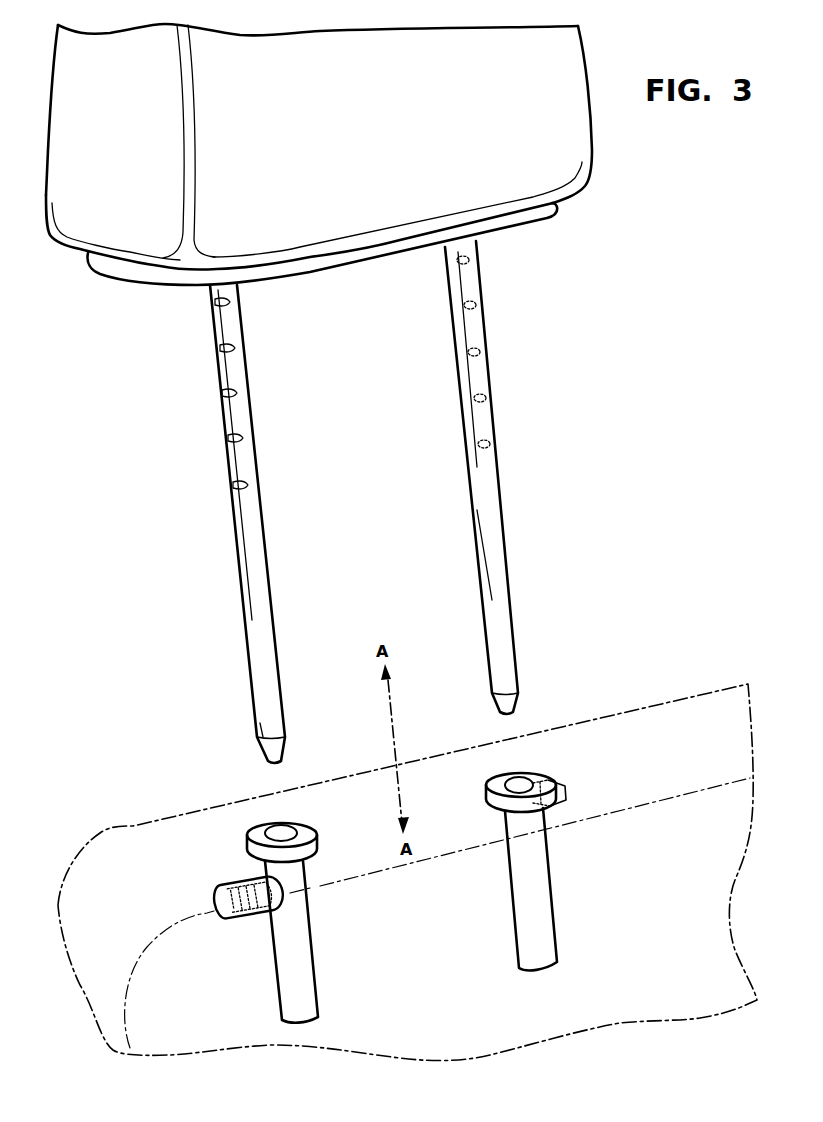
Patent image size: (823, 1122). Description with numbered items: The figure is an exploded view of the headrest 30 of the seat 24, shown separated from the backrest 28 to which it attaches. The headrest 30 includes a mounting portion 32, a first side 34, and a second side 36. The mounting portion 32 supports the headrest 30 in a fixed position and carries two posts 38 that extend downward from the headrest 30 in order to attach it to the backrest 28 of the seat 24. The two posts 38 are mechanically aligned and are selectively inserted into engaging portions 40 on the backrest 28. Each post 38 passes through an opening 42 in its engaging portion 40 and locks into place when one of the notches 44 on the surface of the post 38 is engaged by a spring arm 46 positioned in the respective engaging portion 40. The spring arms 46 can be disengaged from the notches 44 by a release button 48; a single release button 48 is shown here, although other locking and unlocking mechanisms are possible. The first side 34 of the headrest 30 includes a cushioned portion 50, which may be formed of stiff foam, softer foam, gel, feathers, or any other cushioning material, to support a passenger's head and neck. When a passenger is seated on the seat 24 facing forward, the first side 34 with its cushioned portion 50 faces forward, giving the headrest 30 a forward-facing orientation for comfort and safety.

The seat 24 is at (700, 314).
The backrest 28 is at (58, 905).
The headrest 30 is at (335, 136).
The mounting portion 32 is at (310, 267).
The first side 34 is at (575, 147).
The second side 36 is at (58, 92).
The post 38 is at (244, 352).
The engaging portion 40 is at (311, 932).
The opening 42 is at (282, 826).
The notch 44 is at (215, 348).
The spring arm 46 is at (235, 887).
The release button 48 is at (567, 790).
The cushioned portion 50 is at (170, 212).